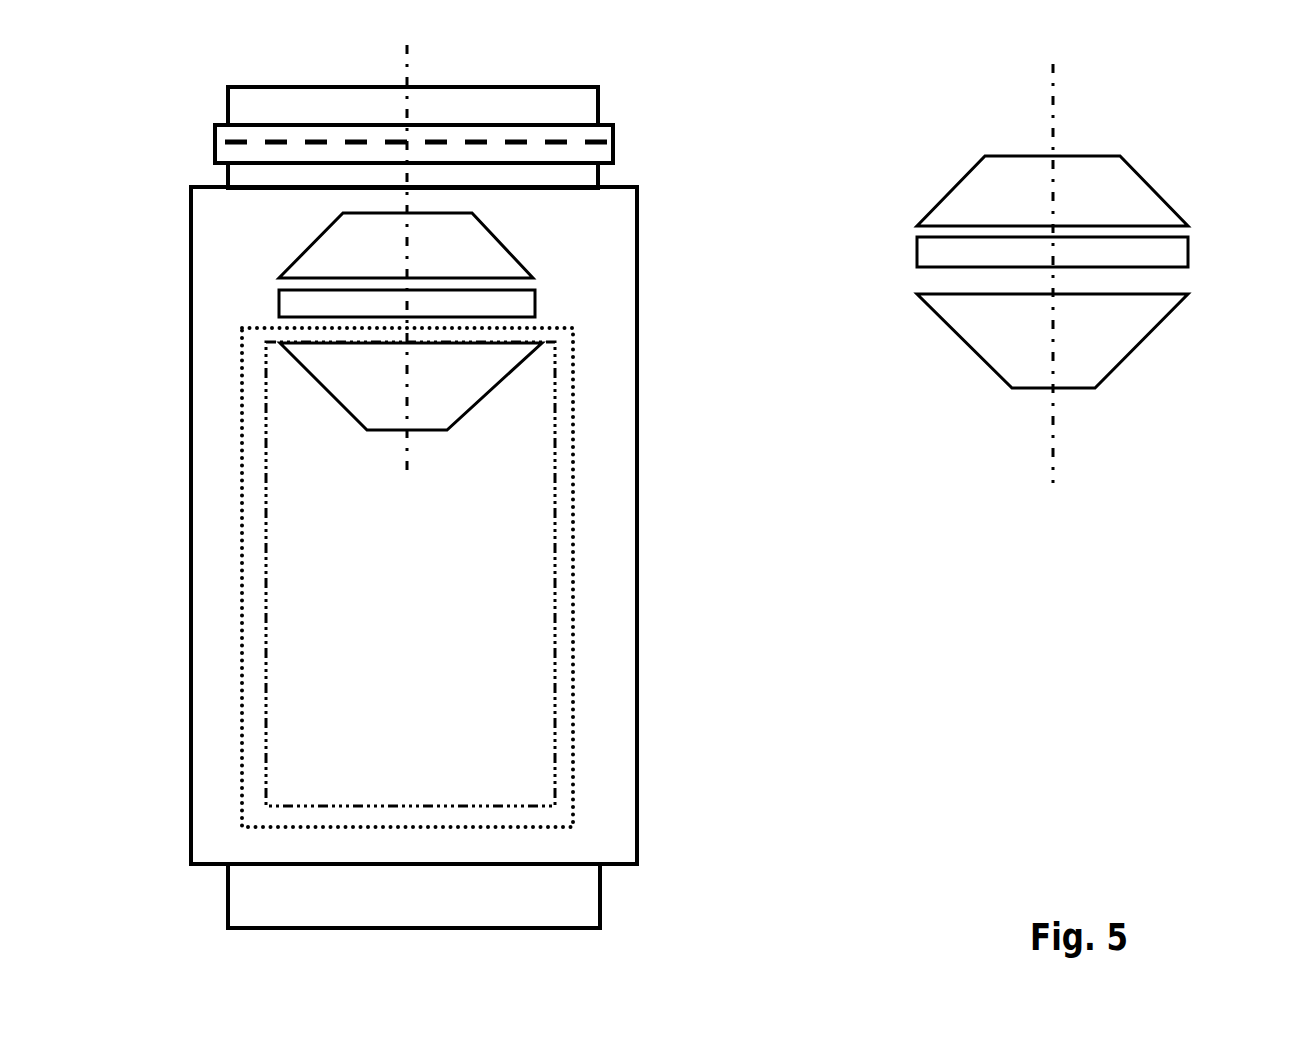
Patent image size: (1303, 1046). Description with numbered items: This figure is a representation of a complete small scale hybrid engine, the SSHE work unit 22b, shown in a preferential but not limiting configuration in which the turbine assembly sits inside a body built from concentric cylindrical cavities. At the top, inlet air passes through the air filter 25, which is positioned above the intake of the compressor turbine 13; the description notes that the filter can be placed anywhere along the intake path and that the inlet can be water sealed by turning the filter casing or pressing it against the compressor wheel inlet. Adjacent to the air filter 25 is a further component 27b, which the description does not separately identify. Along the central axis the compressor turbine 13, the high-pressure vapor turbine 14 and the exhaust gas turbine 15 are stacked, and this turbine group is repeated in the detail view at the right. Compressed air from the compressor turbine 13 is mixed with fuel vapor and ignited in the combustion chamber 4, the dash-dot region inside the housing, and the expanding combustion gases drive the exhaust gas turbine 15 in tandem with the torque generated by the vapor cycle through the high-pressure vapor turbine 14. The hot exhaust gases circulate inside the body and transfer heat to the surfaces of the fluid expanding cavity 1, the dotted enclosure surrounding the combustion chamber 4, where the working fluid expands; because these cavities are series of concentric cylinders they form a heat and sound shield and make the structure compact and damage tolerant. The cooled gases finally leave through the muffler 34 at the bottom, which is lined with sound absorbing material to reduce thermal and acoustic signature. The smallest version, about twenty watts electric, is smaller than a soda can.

The fluid expanding cavity 1 is at (563, 530).
The combustion chamber 4 is at (462, 597).
The compressor turbine 13 is at (1158, 188).
The high-pressure vapor turbine 14 is at (545, 303).
The exhaust gas turbine 15 is at (1100, 390).
The SSHE work unit 22b is at (647, 720).
The air filter 25 is at (200, 143).
The upper housing cap 27b is at (562, 135).
The muffler 34 is at (555, 899).